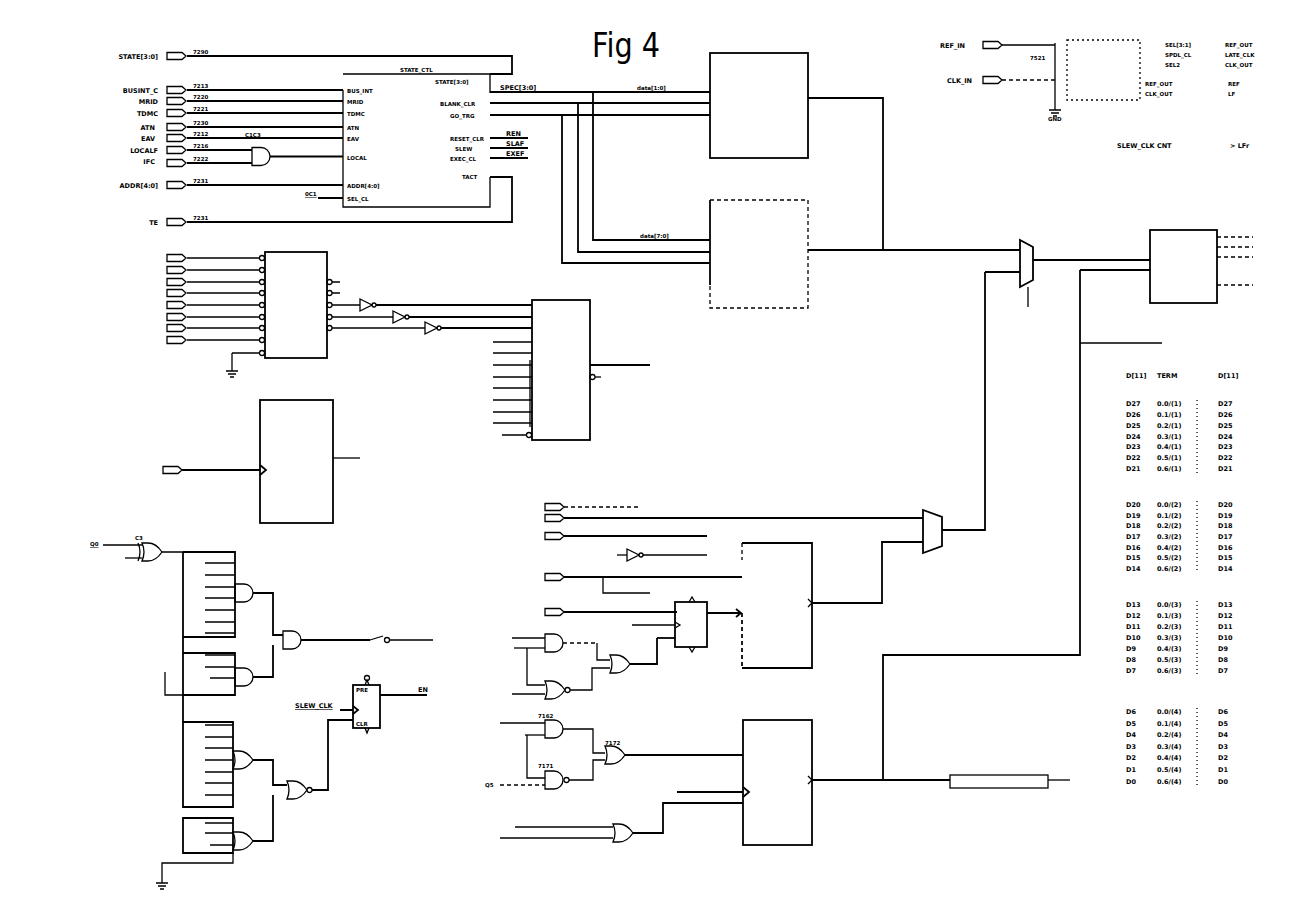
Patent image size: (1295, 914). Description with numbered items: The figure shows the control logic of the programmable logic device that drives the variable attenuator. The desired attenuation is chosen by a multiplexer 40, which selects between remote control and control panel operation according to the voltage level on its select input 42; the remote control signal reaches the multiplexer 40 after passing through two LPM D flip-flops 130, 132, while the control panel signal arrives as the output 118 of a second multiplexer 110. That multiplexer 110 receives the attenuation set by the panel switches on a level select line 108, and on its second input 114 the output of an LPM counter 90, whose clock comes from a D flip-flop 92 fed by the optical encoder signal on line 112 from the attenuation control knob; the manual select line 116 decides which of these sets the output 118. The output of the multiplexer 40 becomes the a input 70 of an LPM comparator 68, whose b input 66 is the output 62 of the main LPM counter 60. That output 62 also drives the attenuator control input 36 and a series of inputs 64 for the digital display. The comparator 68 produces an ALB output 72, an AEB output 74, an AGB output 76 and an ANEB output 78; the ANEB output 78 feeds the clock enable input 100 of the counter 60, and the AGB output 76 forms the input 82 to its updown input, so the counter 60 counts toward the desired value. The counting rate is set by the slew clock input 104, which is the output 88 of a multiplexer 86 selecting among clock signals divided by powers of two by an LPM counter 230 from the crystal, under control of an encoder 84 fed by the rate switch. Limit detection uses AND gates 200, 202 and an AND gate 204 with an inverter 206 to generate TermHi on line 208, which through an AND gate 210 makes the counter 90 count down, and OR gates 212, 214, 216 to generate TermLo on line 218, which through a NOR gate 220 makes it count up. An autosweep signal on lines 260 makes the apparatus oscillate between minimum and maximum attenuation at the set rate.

The control input 36 is at (1081, 382).
The multiplexer 40 is at (1030, 235).
The select input 42 is at (1018, 317).
The LPM counter 60 is at (780, 793).
The output 62 is at (872, 782).
The inputs 64 is at (1068, 777).
The b input 66 is at (1100, 282).
The LPM comparator 68 is at (1138, 226).
The a input 70 is at (1073, 262).
The ALB output 72 is at (1198, 221).
The AEB output 74 is at (1158, 296).
The AGB output 76 is at (1203, 288).
The ANEB output 78 is at (1228, 298).
The input to updown input 82 is at (687, 754).
The 74148 encoder 84 is at (296, 298).
The 74151 multiplexer 86 is at (560, 356).
The output 88 is at (605, 367).
The LPM counter 90 is at (775, 602).
The D flip-flop 92 is at (695, 656).
The clock enable input 100 is at (703, 806).
The slew clock input 104 is at (627, 360).
The level select line 108 is at (733, 517).
The multiplexer 110 is at (928, 500).
The line 112 is at (600, 611).
The second input 114 is at (872, 603).
The manual select line 116 is at (636, 504).
The output 118 is at (978, 349).
The LPM D flip-flop 130 is at (765, 97).
The LPM D flip-flop 132 is at (762, 248).
The AND gate 200 is at (237, 594).
The AND gate 202 is at (237, 678).
The AND gate 204 is at (293, 634).
The inverter 206 is at (378, 634).
The line 208 is at (482, 637).
The AND gate 210 is at (565, 648).
The OR gate 212 is at (237, 761).
The OR gate 214 is at (240, 846).
The OR gate 216 is at (293, 797).
The line 218 is at (494, 650).
The NOR gate 220 is at (562, 694).
The LPM counter 230 is at (292, 458).
The autosweep lines 260 is at (575, 540).